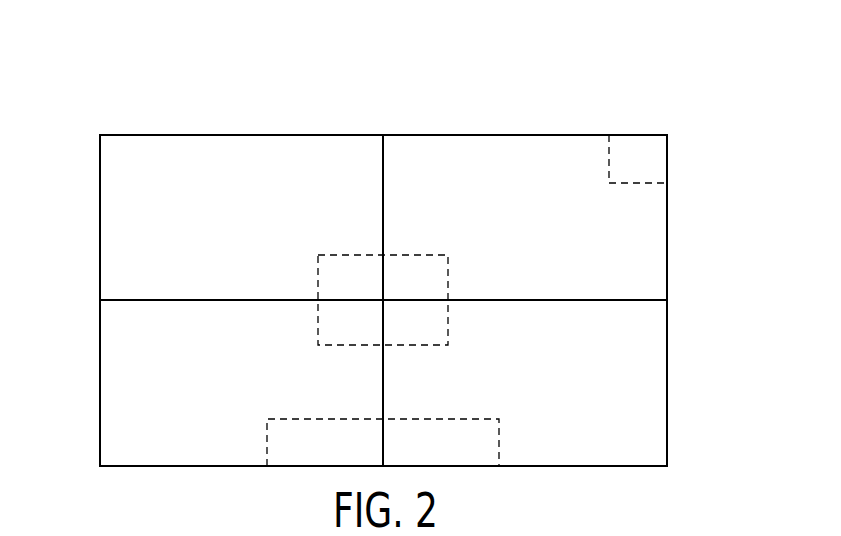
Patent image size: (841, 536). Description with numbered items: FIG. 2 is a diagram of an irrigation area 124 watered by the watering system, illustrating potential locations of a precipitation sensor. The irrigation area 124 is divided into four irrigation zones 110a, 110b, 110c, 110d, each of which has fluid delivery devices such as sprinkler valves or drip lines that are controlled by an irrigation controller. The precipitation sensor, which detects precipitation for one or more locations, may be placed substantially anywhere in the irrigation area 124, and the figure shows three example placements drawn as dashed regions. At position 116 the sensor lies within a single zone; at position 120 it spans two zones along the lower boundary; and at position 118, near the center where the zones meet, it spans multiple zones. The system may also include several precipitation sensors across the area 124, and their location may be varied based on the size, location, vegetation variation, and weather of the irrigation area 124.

The irrigation area 124 is at (386, 98).
The irrigation zone 110a is at (100, 219).
The irrigation zone 110b is at (100, 392).
The irrigation zone 110c is at (667, 243).
The irrigation zone 110d is at (667, 380).
The position 116 is at (642, 160).
The position 118 is at (417, 281).
The position 120 is at (398, 432).